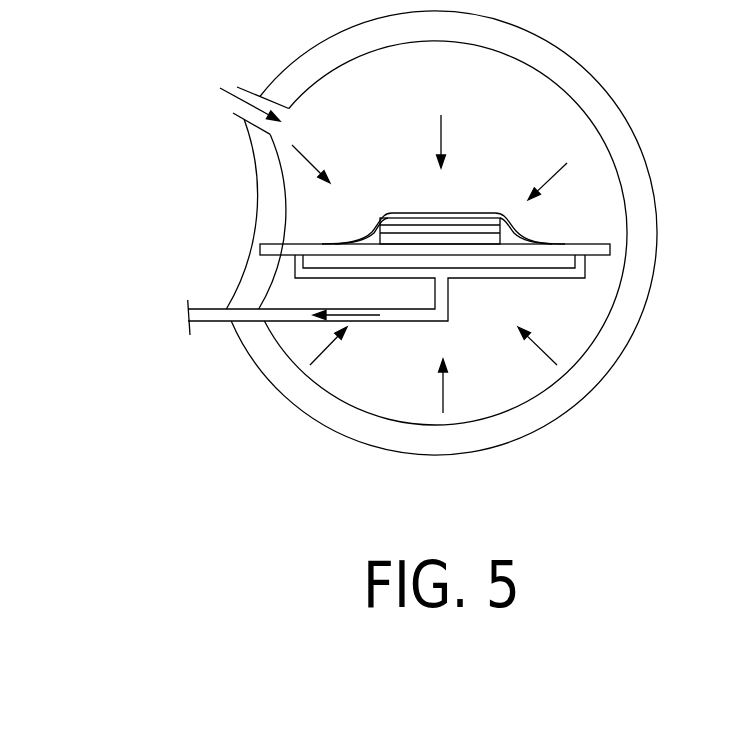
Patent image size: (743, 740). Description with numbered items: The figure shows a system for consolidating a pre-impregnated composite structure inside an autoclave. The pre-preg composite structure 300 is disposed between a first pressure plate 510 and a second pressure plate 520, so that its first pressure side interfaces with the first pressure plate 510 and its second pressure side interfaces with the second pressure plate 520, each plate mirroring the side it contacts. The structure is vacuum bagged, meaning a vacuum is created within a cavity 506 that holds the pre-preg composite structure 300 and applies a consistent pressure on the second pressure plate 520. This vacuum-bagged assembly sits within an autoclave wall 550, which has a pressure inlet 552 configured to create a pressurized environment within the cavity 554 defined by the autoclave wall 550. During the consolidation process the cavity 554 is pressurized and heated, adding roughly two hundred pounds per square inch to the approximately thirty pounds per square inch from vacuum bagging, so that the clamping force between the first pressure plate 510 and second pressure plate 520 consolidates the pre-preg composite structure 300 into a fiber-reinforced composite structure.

The pre-preg composite structure 300 is at (380, 238).
The cavity 506 is at (521, 238).
The first pressure plate 510 is at (505, 247).
The second pressure plate 520 is at (457, 227).
The autoclave wall 550 is at (632, 312).
The pressure inlet 552 is at (255, 118).
The cavity 554 is at (512, 158).